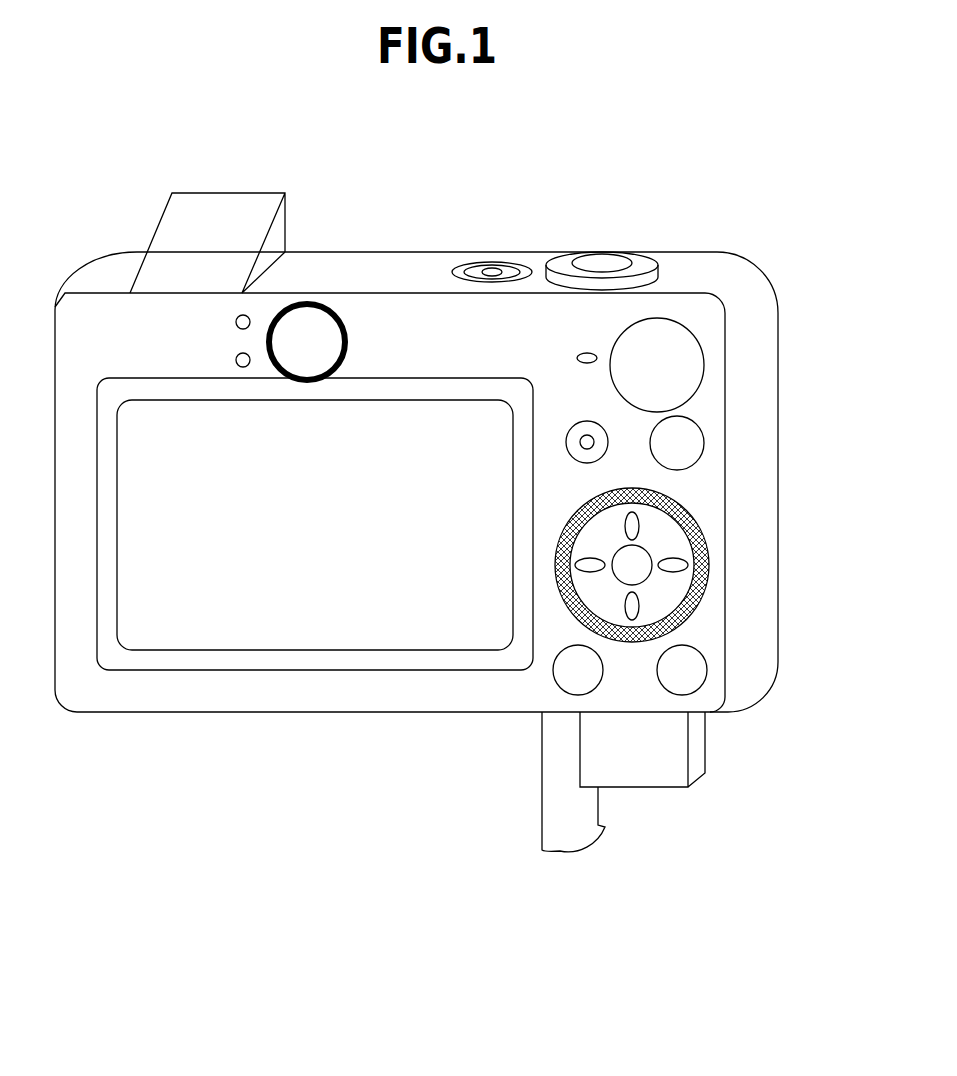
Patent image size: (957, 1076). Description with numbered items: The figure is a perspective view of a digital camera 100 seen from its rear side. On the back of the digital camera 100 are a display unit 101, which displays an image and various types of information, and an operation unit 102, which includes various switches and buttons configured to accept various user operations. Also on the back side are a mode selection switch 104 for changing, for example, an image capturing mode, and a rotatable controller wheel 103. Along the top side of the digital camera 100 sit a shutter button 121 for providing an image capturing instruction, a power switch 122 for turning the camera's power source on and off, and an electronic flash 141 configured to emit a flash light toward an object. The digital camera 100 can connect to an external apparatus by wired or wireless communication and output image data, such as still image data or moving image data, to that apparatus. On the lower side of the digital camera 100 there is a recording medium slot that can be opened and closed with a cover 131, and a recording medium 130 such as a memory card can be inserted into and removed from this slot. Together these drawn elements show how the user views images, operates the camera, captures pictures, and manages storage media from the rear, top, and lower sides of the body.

The digital camera 100 is at (212, 752).
The display unit 101 is at (337, 628).
The operation unit 102 is at (606, 287).
The controller wheel 103 is at (575, 617).
The mode selection switch 104 is at (678, 350).
The shutter button 121 is at (603, 253).
The power switch 122 is at (492, 262).
The recording medium 130 is at (678, 748).
The cover 131 is at (572, 833).
The electronic flash 141 is at (225, 217).